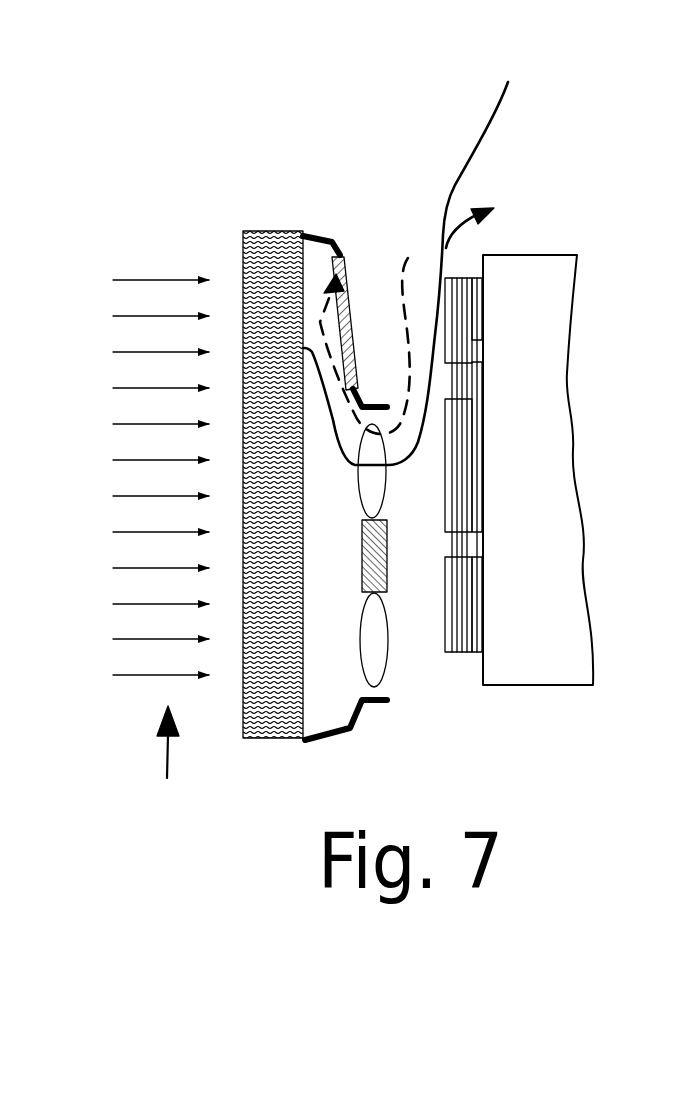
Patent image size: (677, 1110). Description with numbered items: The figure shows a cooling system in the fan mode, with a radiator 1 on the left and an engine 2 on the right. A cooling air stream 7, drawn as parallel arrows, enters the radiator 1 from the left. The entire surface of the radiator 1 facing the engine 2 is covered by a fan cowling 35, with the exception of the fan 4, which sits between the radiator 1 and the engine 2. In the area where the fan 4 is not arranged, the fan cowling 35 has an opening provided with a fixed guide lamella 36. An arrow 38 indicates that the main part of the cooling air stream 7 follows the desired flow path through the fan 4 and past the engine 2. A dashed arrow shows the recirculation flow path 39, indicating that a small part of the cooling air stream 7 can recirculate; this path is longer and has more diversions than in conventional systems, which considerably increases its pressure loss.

The radiator 1 is at (243, 233).
The engine 2 is at (538, 340).
The fan 4 is at (372, 638).
The cooling air stream 7 is at (161, 569).
The fan cowling 35 is at (322, 238).
The guide lamella 36 is at (360, 292).
The arrow 38 is at (421, 247).
The recirculation flow path 39 is at (408, 258).